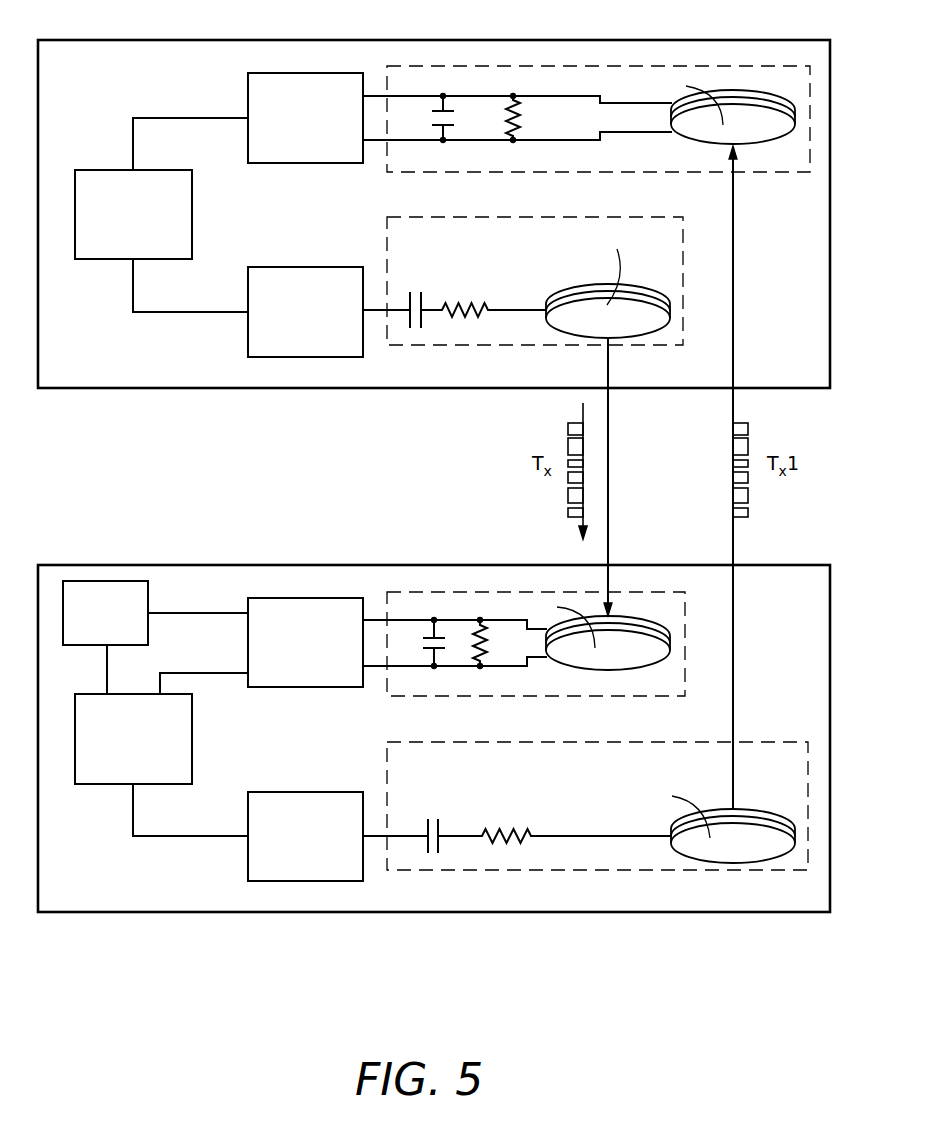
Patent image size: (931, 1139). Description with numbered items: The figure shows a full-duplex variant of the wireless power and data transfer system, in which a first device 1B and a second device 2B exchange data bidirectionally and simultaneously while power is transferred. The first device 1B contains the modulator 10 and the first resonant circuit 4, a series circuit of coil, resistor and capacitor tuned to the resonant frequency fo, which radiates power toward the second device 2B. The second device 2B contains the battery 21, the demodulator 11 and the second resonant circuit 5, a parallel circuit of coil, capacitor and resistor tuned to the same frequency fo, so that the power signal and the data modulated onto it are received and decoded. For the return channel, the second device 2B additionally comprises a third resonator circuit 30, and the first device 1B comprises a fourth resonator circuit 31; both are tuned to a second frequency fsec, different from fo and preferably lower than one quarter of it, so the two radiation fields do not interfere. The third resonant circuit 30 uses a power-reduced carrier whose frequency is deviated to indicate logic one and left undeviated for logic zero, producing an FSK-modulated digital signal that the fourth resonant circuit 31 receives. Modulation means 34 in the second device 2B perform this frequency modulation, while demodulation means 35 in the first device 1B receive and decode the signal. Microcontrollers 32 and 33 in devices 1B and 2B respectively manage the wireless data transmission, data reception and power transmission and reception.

The first device 1B is at (97, 40).
The second device 2B is at (97, 565).
The fourth resonator circuit 31 is at (512, 66).
The first resonant circuit 4 is at (483, 217).
The second resonant circuit 5 is at (468, 590).
The third resonator circuit 30 is at (452, 742).
The microcontroller 32 is at (163, 170).
The demodulation means 35 is at (305, 163).
The modulator 10 is at (287, 267).
The battery 21 is at (95, 645).
The demodulator 11 is at (305, 687).
The microcontroller 33 is at (75, 770).
The modulation means 34 is at (287, 792).